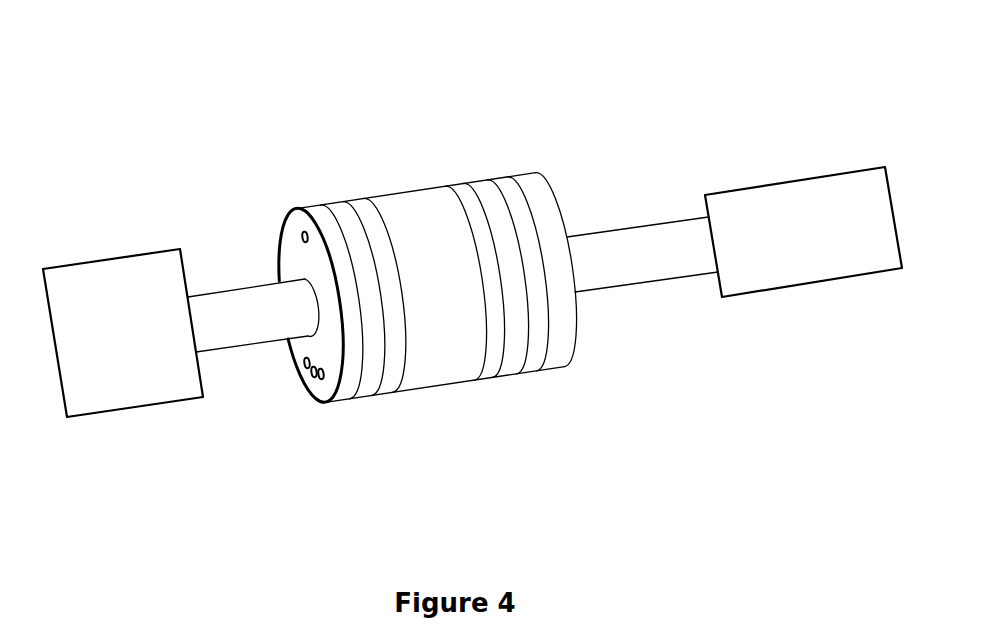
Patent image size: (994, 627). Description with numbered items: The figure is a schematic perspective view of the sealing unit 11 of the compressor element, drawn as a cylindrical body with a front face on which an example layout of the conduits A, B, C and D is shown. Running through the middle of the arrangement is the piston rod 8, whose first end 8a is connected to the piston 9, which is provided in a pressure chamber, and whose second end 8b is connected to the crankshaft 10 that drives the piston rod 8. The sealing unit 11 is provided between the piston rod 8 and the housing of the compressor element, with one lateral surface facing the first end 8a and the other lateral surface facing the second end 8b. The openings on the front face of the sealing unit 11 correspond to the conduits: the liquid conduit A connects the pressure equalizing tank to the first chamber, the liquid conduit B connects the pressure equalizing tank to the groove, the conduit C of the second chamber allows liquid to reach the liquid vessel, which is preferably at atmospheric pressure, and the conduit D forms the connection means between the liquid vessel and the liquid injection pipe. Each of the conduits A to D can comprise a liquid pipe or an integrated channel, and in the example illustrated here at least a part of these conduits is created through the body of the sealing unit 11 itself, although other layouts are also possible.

The sealing unit 11 is at (592, 124).
The crankshaft 10 is at (108, 272).
The piston 9 is at (770, 183).
The piston rod 8 is at (453, 259).
The first end 8a is at (647, 271).
The second end 8b is at (233, 298).
The liquid conduit A is at (321, 381).
The liquid conduit B is at (300, 237).
The conduit C is at (313, 379).
The conduit D is at (303, 363).